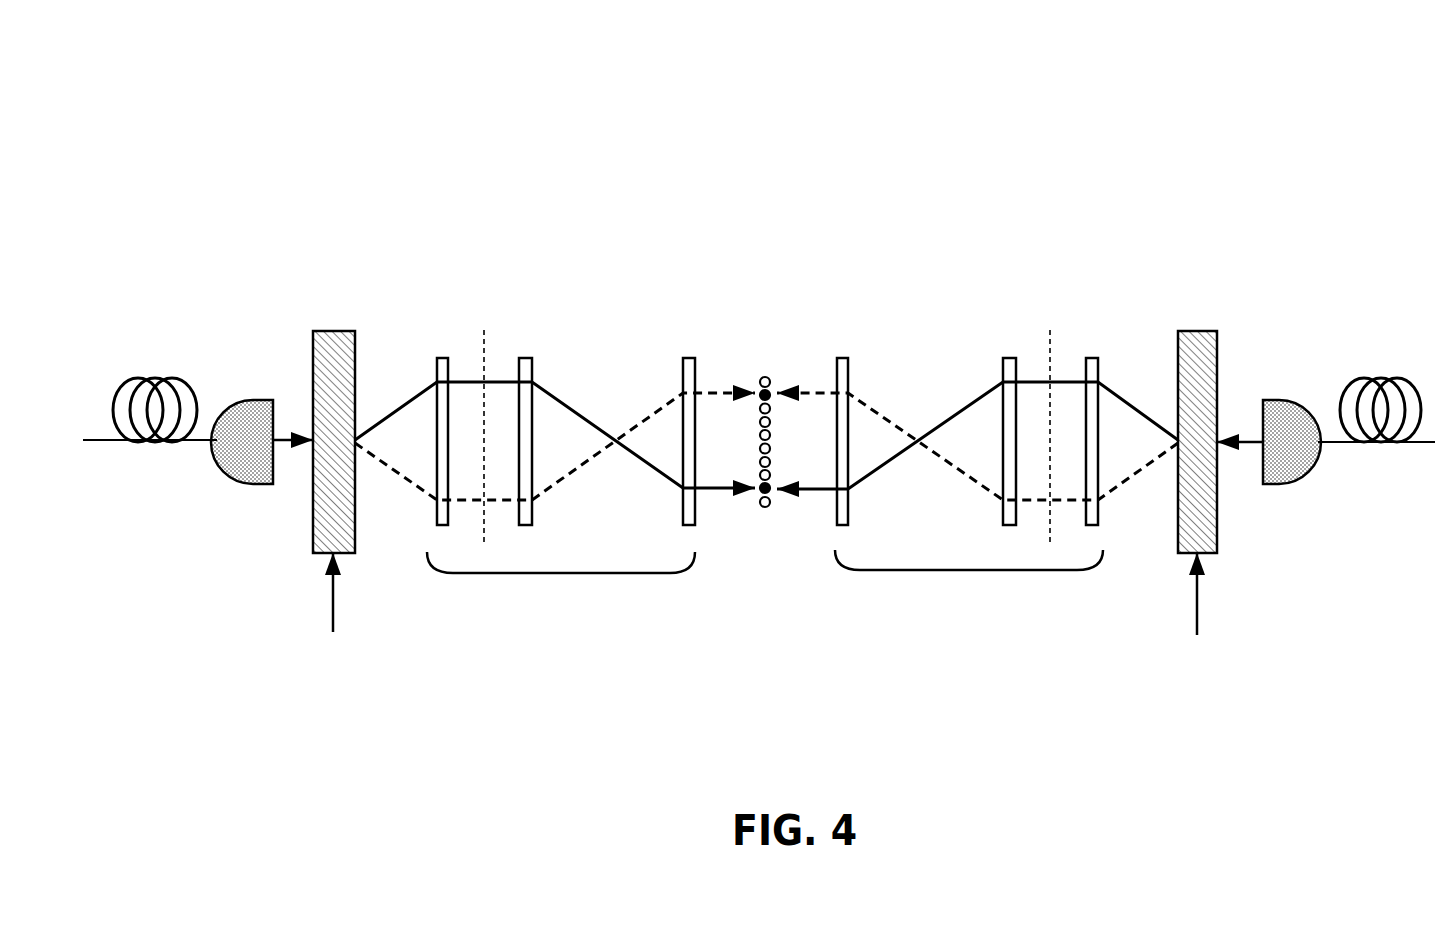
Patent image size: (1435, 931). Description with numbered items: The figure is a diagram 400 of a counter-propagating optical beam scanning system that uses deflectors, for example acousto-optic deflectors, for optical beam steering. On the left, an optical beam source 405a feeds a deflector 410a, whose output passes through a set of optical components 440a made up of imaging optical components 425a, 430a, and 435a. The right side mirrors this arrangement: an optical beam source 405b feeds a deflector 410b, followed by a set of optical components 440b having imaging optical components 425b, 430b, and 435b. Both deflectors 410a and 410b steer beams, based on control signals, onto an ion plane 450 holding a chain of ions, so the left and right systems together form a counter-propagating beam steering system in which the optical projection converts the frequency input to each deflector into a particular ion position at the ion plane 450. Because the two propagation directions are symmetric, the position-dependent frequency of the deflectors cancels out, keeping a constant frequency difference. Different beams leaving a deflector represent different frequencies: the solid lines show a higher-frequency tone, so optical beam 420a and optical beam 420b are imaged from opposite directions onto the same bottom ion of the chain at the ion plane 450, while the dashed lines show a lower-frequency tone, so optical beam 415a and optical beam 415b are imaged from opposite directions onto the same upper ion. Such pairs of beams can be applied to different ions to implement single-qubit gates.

The diagram 400 is at (245, 78).
The optical beam source 405a is at (262, 400).
The optical beam source 405b is at (1284, 400).
The deflector 410a is at (337, 331).
The deflector 410b is at (1200, 333).
The optical beam 415a is at (385, 465).
The optical beam 415b is at (1143, 468).
The optical beam 420a is at (400, 408).
The optical beam 420b is at (1140, 410).
The imaging optical component 425a is at (443, 358).
The imaging optical component 425b is at (1092, 358).
The imaging optical component 430a is at (525, 358).
The imaging optical component 430b is at (1010, 358).
The imaging optical component 435a is at (688, 358).
The imaging optical component 435b is at (841, 358).
The set of optical components 440a is at (560, 468).
The set of optical components 440b is at (961, 467).
The ion plane 450 is at (766, 370).